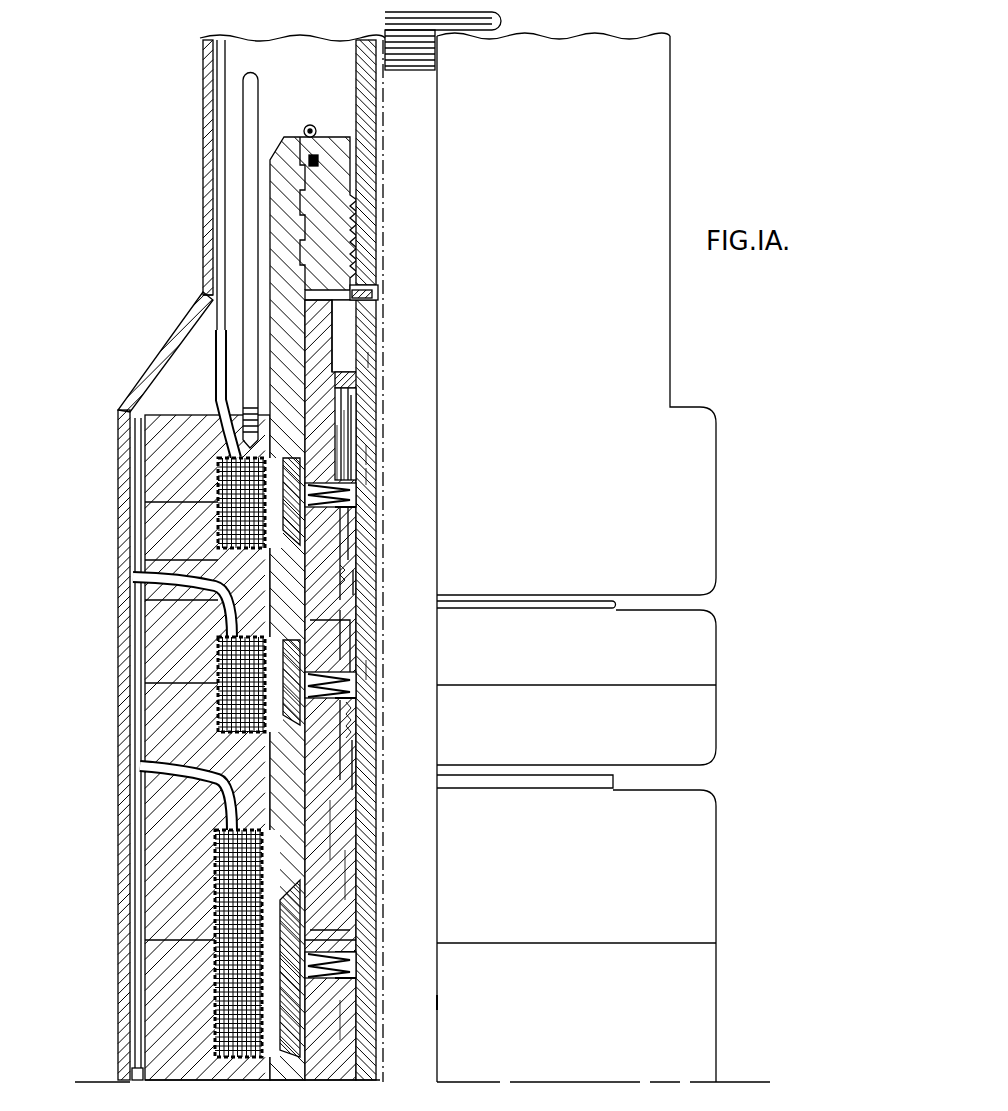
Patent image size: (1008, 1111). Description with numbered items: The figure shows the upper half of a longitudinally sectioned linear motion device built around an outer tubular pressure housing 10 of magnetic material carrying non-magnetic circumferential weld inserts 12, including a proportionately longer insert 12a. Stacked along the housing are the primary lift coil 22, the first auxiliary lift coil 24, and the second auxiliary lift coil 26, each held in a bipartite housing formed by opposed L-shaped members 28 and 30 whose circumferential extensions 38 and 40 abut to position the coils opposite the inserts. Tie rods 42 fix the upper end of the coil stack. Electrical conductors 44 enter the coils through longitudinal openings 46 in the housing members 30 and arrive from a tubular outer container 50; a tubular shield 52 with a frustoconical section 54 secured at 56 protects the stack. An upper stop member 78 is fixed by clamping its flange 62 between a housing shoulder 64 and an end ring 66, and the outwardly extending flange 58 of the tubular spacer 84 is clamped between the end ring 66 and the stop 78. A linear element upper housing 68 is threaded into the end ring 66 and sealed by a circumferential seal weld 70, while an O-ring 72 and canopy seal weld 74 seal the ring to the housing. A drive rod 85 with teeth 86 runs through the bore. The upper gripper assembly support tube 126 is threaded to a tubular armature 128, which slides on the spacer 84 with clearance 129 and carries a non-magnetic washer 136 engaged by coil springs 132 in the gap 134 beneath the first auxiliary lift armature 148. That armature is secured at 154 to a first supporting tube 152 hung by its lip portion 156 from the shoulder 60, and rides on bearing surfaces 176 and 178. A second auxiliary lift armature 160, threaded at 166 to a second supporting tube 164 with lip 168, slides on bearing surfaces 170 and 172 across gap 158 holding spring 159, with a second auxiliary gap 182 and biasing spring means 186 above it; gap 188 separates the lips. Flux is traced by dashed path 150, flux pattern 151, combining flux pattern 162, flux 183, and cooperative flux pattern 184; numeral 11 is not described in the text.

The outer tubular pressure housing 10 is at (272, 160).
The well casing string 11 is at (437, 1003).
The circumferential weld insert 12 is at (346, 548).
The insert 12a is at (346, 742).
The primary lift coil 22 is at (232, 975).
The first auxiliary lift coil 24 is at (225, 697).
The second auxiliary lift coil 26 is at (228, 520).
The L-shaped housing member 28 is at (162, 553).
The L-shaped housing member 30 is at (150, 486).
The circumferential extension 38 is at (250, 772).
The circumferential extension 40 is at (215, 616).
The tie rod 42 is at (258, 85).
The electrical conductor 44 is at (225, 55).
The longitudinal opening 46 is at (222, 440).
The tubular outer container 50 is at (670, 145).
The tubular shield 52 is at (122, 455).
The frustoconical section 54 is at (180, 320).
The securance 56 is at (203, 290).
The outwardly extending flange 58 is at (378, 298).
The shoulder 60 is at (355, 403).
The flange 62 is at (325, 312).
The shoulder 64 is at (322, 330).
The end ring 66 is at (330, 190).
The linear element upper housing 68 is at (355, 222).
The circumferential seal weld 70 is at (365, 290).
The O-ring 72 is at (318, 155).
The canopy seal weld 74 is at (310, 124).
The upper stop member 78 is at (318, 352).
The tubular spacer 84 is at (368, 605).
The drive rod 85 is at (437, 130).
The teeth 86 is at (495, 18).
The upper gripper assembly support tube 126 is at (330, 940).
The tubular armature 128 is at (350, 1020).
The clearance 129 is at (300, 1080).
The coil spring 132 is at (340, 975).
The gap 134 is at (340, 958).
The non-magnetic washer 136 is at (336, 990).
The first auxiliary lift armature 148 is at (330, 824).
The flux path 150 is at (345, 870).
The flux pattern 151 is at (372, 668).
The first supporting tube 152 is at (355, 581).
The threaded securement 154 is at (350, 760).
The lip portion 156 is at (365, 374).
The gap 158 is at (348, 706).
The spring 159 is at (350, 725).
The second auxiliary lift armature 160 is at (345, 630).
The combining flux pattern 162 is at (352, 688).
The second supporting tube 164 is at (352, 494).
The threaded securement 166 is at (350, 565).
The outwardly extending lip 168 is at (360, 390).
The bearing surface 170 is at (350, 418).
The bearing surface 172 is at (340, 650).
The bearing surface 176 is at (345, 432).
The bearing surface 178 is at (340, 912).
The second auxiliary gap 182 is at (354, 530).
The flux 183 is at (372, 476).
The cooperative flux pattern 184 is at (372, 455).
The biasing spring means 186 is at (356, 512).
The gap 188 is at (372, 360).